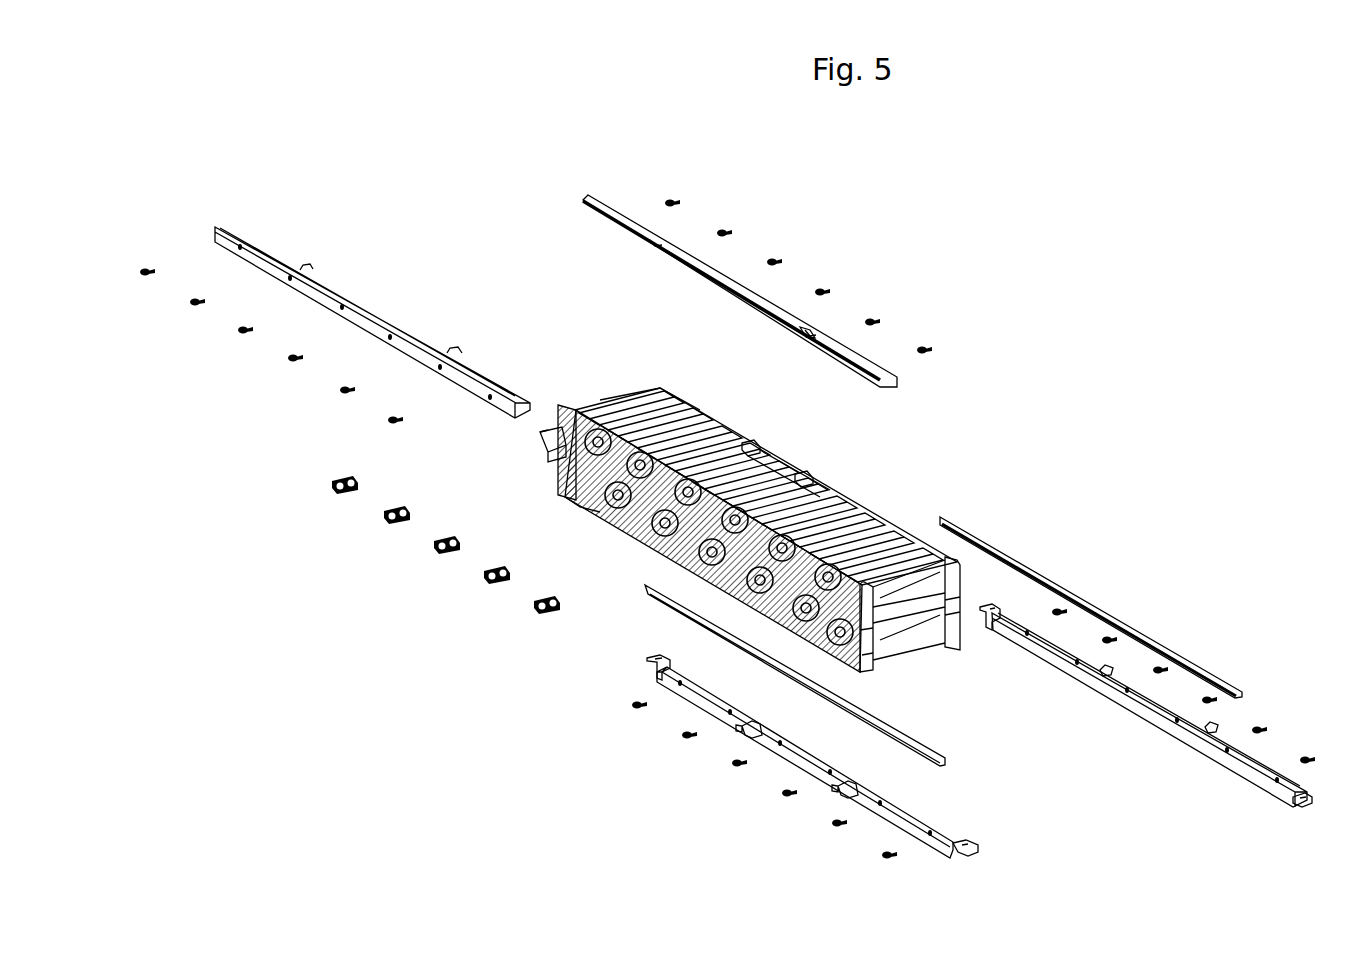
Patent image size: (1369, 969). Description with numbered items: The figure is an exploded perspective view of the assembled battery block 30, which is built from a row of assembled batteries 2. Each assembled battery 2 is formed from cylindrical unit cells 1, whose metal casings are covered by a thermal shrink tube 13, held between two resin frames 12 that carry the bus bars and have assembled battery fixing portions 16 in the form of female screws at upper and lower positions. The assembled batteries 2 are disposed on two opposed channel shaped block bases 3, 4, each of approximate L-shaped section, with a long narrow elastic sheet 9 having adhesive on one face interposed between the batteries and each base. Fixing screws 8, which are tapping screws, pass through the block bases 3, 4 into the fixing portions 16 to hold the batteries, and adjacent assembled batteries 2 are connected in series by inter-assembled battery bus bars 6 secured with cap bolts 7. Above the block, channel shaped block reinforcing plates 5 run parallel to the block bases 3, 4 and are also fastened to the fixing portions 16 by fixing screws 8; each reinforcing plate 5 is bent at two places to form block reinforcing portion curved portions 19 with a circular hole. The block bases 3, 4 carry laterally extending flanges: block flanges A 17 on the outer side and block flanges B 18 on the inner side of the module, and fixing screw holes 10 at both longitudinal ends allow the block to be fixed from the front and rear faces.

The unit cell 1 is at (612, 403).
The assembled battery 2 is at (840, 470).
The block base 3 is at (775, 750).
The block base 4 is at (1123, 683).
The block reinforcing plate 5 is at (333, 285).
The inter-assembled battery bus bar 6 is at (343, 477).
The cap bolt 7 is at (333, 480).
The fixing screw 8 is at (146, 268).
The elastic sheet 9 is at (640, 590).
The fixing screw hole 10 is at (990, 607).
The frame 12 is at (892, 513).
The thermal shrink tube 13 is at (625, 388).
The assembled battery fixing portion 16 is at (560, 432).
The block flange A 17 is at (837, 795).
The block flange B 18 is at (1213, 727).
The block reinforcing portion curved portion 19 is at (805, 332).
The assembled battery block 30 is at (848, 179).